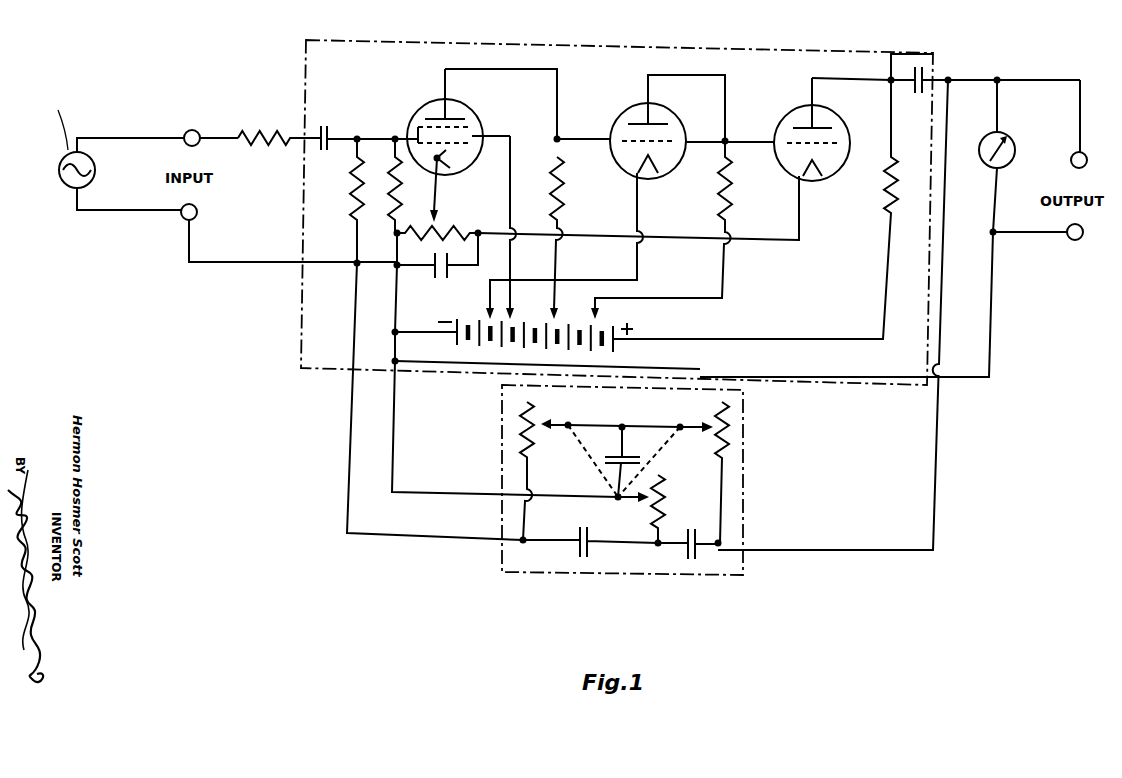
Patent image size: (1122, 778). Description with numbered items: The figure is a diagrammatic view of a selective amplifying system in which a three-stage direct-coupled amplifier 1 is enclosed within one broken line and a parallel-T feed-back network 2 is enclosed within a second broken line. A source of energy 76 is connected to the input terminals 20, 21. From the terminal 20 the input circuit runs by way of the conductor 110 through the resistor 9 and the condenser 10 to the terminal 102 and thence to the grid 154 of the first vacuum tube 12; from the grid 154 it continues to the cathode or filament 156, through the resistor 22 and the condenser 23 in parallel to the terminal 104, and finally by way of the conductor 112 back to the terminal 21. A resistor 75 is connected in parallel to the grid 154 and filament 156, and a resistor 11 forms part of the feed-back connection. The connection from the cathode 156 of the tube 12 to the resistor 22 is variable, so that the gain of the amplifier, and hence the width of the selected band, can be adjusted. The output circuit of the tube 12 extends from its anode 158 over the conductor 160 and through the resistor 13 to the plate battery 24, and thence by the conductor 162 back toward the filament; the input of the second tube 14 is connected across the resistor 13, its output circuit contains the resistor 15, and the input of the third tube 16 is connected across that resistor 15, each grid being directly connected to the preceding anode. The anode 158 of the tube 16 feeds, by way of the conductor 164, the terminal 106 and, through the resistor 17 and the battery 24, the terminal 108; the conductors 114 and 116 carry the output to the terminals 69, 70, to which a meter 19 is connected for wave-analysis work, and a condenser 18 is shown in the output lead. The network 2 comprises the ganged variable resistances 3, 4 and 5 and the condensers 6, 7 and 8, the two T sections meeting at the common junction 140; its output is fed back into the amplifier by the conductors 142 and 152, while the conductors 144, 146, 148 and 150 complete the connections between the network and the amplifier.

The amplifier enclosure 1 is at (655, 43).
The parallel-T network 2 is at (665, 576).
The resistance 3 is at (544, 469).
The resistance 4 is at (714, 469).
The resistance 5 is at (666, 509).
The condenser 6 is at (589, 545).
The condenser 7 is at (688, 546).
The condenser 8 is at (639, 460).
The resistor 9 is at (279, 129).
The condenser 10 is at (366, 128).
The resistor 11 is at (345, 201).
The vacuum tube 12 is at (445, 122).
The resistor 13 is at (567, 238).
The vacuum tube 14 is at (665, 127).
The resistor 15 is at (673, 230).
The vacuum tube 16 is at (812, 129).
The resistor 17 is at (766, 208).
The output coupling capacitor 18 is at (986, 78).
The meter 19 is at (999, 156).
The input terminal 20 is at (189, 127).
The input terminal 21 is at (178, 220).
The resistor 22 is at (437, 199).
The condenser 23 is at (439, 262).
The plate battery 24 is at (615, 318).
The output terminal 69 is at (1089, 124).
The output terminal 70 is at (1045, 239).
The resistor 75 is at (391, 133).
The source 76 is at (102, 134).
The terminal 102 is at (387, 165).
The terminal 104 is at (395, 236).
The terminal 106 is at (890, 66).
The terminal 108 is at (397, 358).
The conductor 110 is at (218, 130).
The conductor 112 is at (228, 258).
The conductor 114 is at (970, 80).
The conductor 116 is at (973, 378).
The common junction 140 is at (618, 500).
The conductor 142 is at (393, 468).
The conductor 144 is at (393, 348).
The conductor 146 is at (720, 546).
The feedback conductor 148 is at (937, 512).
The conductor 150 is at (521, 543).
The conductor 152 is at (383, 538).
The grid 154 is at (462, 140).
The cathode 156 is at (452, 168).
The anode 158 is at (458, 118).
The conductor 160 is at (519, 68).
The conductor 162 is at (396, 304).
The conductor 164 is at (850, 76).